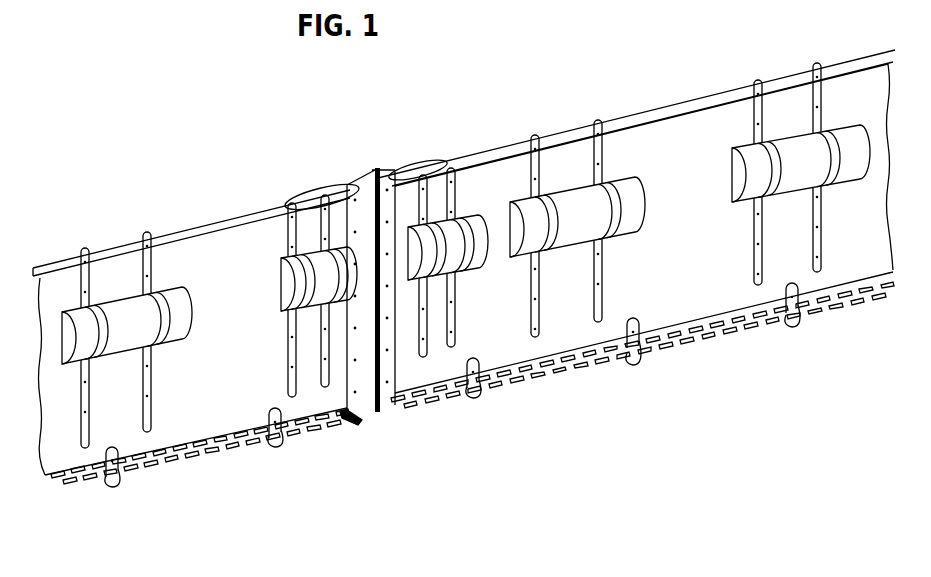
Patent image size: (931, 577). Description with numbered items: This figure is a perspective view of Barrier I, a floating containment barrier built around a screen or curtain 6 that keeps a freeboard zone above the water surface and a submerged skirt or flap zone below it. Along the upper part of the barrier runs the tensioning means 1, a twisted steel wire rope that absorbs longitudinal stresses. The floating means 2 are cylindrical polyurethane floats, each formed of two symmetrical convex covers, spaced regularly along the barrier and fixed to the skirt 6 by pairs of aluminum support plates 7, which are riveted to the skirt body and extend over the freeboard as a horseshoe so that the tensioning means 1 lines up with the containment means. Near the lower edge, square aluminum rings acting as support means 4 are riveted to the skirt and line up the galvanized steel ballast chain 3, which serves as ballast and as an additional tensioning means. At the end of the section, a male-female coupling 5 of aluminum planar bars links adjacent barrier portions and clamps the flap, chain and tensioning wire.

The tensioning means 1 is at (223, 220).
The floating means 2 is at (114, 338).
The ballast chain 3 is at (198, 457).
The support means 4 is at (640, 355).
The male-female couplings 5 is at (357, 180).
The skirt 6 is at (697, 230).
The support plates 7 is at (534, 133).